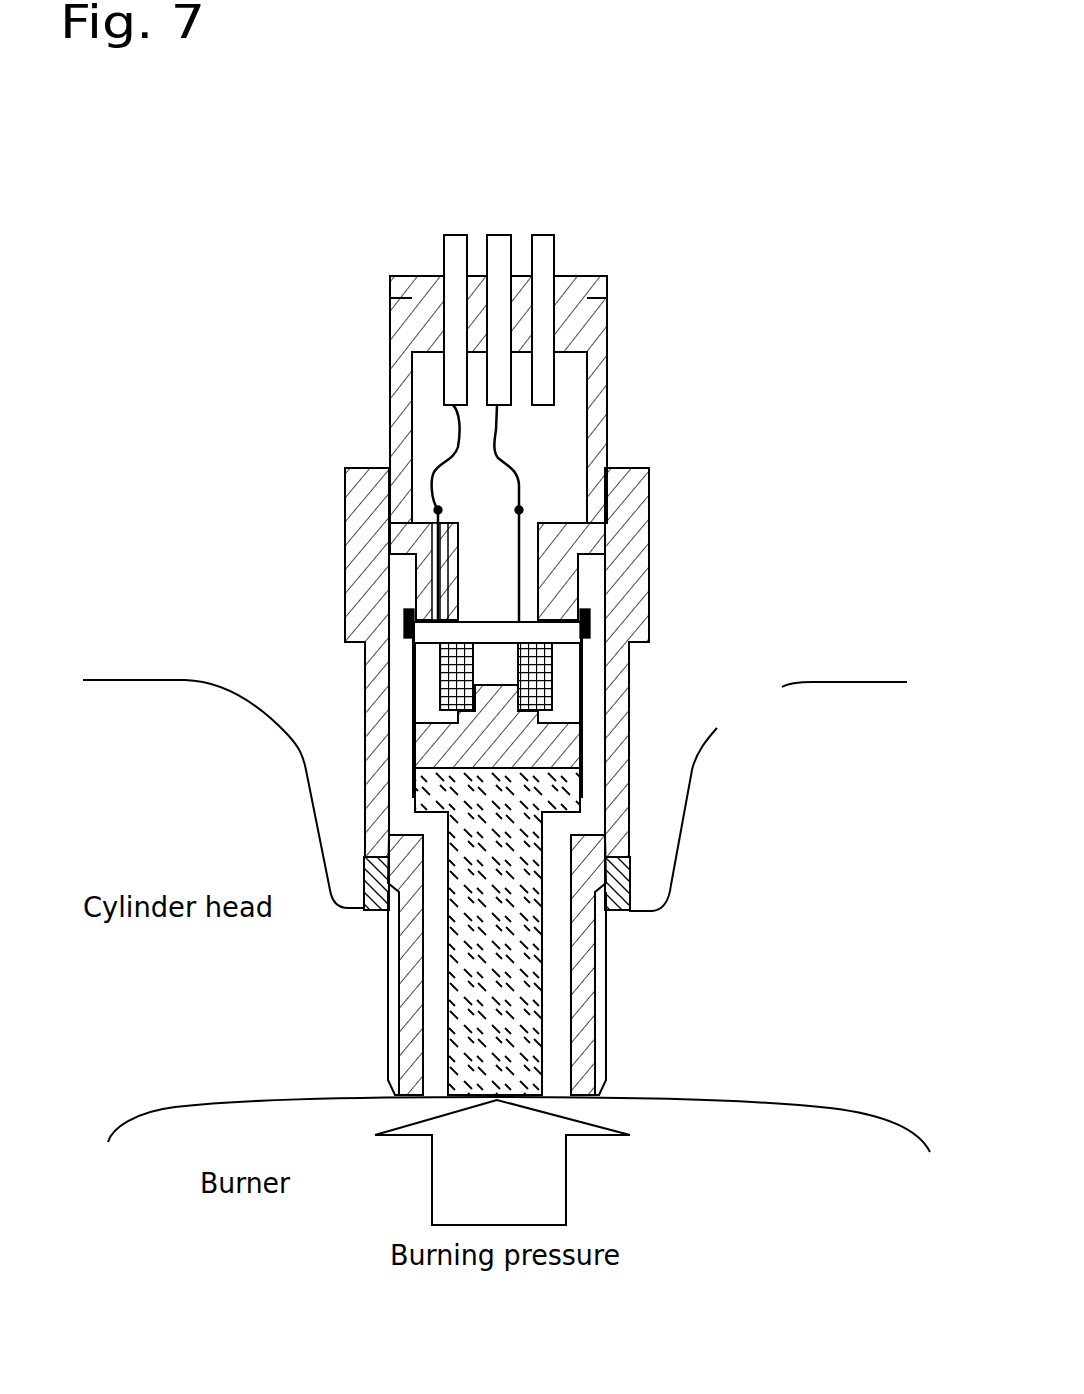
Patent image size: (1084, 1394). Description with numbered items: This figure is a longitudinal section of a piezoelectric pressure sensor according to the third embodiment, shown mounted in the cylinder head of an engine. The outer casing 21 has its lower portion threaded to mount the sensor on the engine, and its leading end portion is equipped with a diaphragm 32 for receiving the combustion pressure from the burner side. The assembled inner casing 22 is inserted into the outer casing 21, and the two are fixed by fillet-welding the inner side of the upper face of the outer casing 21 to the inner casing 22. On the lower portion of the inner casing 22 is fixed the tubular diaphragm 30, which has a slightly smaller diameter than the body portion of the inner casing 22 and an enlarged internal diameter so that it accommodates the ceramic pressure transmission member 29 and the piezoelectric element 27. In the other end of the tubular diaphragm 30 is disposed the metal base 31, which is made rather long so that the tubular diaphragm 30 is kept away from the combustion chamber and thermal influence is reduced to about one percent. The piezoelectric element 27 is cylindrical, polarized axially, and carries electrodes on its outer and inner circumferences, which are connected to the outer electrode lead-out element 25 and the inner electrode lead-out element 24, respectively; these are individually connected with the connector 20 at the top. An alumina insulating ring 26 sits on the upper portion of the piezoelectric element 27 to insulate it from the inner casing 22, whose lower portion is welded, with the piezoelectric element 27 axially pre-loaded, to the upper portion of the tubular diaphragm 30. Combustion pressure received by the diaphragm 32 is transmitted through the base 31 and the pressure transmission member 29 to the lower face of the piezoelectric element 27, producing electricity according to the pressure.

The connector 20 is at (578, 292).
The outer casing 21 is at (640, 468).
The inner casing 22 is at (595, 532).
The inner electrode lead-out element 24 is at (520, 584).
The outer electrode lead-out element 25 is at (443, 628).
The insulating ring 26 is at (547, 635).
The piezoelectric element 27 is at (557, 678).
The pressure transmission member 29 is at (557, 745).
The tubular diaphragm 30 is at (580, 697).
The base 31 is at (525, 930).
The diaphragm 32 is at (565, 1098).